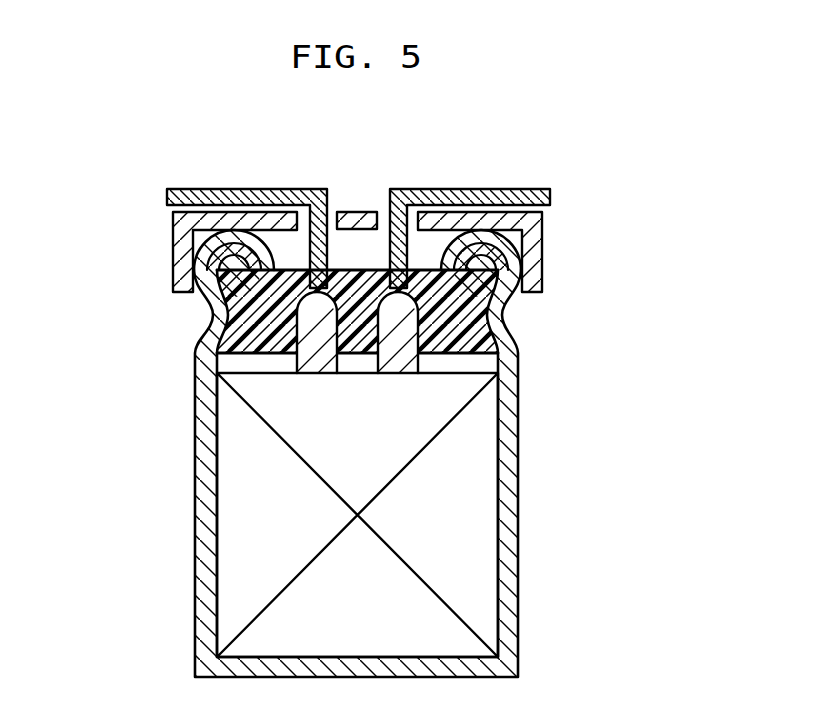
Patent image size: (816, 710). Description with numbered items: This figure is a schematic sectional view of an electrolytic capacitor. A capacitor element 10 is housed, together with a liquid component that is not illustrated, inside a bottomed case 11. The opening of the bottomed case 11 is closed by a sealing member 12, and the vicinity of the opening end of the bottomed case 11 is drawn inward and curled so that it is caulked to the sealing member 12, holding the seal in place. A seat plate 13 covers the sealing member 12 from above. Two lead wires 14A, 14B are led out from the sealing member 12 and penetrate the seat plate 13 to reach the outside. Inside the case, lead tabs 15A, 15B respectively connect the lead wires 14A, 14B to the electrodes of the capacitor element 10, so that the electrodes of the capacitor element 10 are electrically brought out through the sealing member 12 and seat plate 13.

The capacitor element 10 is at (255, 492).
The bottomed case 11 is at (512, 460).
The sealing member 12 is at (453, 317).
The seat plate 13 is at (356, 211).
The lead wire 14A is at (244, 190).
The lead wire 14B is at (478, 195).
The lead tab 15A is at (312, 320).
The lead tab 15B is at (395, 345).